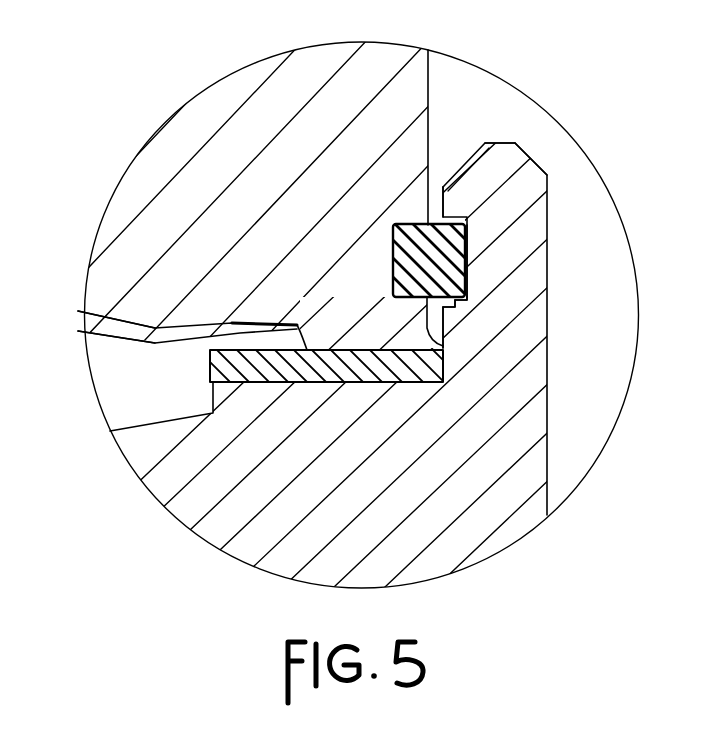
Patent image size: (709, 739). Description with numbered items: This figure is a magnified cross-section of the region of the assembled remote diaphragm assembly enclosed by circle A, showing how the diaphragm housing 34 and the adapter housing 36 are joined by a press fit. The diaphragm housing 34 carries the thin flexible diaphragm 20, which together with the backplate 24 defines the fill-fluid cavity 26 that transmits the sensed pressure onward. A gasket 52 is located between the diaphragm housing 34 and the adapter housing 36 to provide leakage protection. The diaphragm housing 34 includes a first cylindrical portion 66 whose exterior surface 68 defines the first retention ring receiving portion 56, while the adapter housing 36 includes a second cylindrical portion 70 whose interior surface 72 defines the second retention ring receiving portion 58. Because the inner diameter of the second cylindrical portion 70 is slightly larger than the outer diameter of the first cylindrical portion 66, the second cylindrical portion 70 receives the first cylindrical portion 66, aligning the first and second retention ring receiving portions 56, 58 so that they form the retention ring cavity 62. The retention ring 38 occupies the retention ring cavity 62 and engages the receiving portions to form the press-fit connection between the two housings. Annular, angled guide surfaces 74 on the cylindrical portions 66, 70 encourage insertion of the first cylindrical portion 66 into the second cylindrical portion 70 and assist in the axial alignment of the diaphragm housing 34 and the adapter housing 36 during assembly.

The diaphragm 20 is at (117, 334).
The backplate 24 is at (112, 322).
The cavity 26 is at (95, 323).
The diaphragm housing 34 is at (180, 127).
The adapter housing 36 is at (473, 523).
The retention ring 38 is at (412, 242).
The gasket 52 is at (207, 365).
The first retention ring receiving portion 56 is at (393, 250).
The second retention ring receiving portion 58 is at (467, 243).
The retention ring cavity 62 is at (467, 300).
The first cylindrical portion 66 is at (420, 70).
The exterior surface 68 is at (427, 107).
The second cylindrical portion 70 is at (527, 183).
The interior surface 72 is at (447, 318).
The guide surface 74 is at (468, 160).
The circle A is at (590, 462).